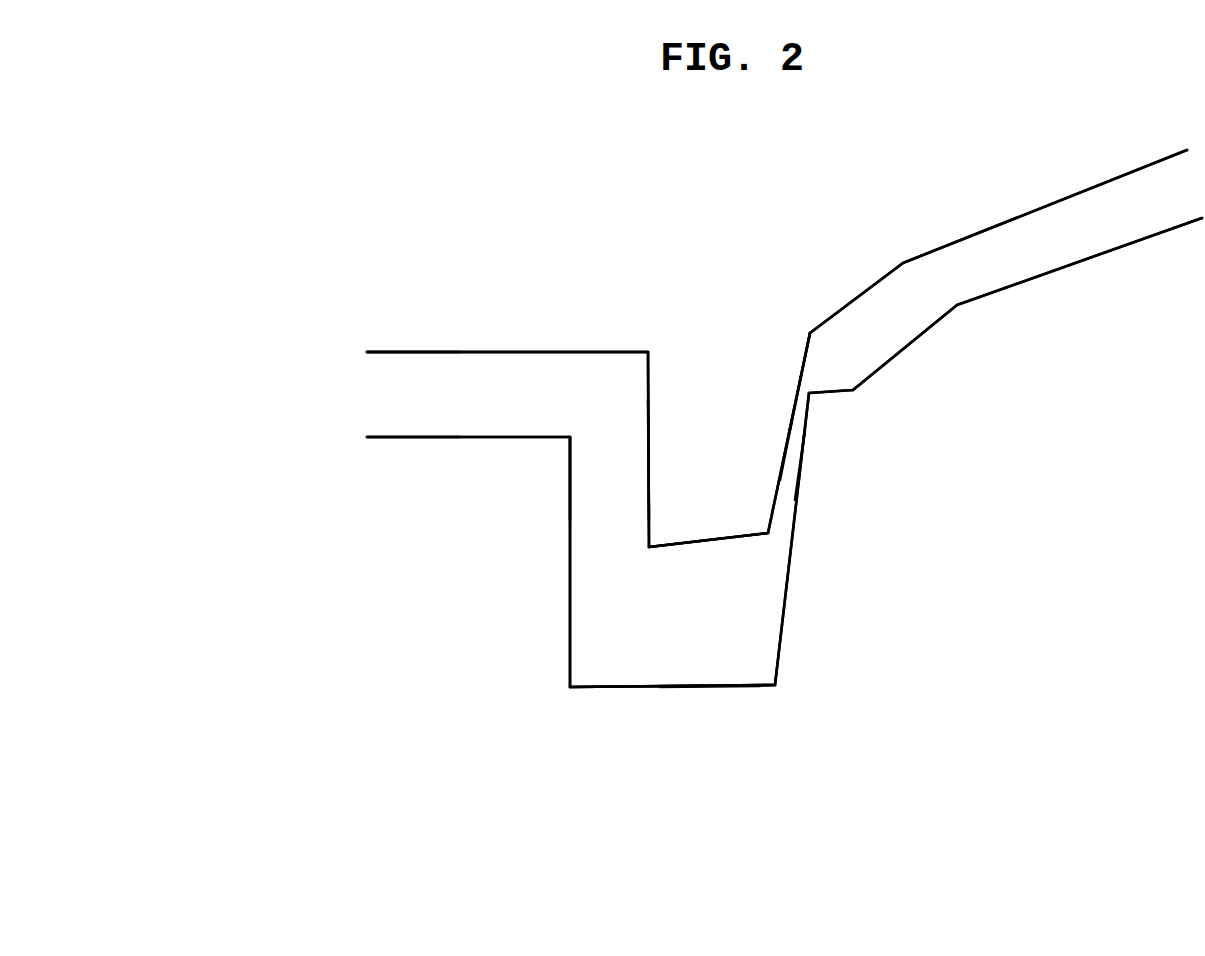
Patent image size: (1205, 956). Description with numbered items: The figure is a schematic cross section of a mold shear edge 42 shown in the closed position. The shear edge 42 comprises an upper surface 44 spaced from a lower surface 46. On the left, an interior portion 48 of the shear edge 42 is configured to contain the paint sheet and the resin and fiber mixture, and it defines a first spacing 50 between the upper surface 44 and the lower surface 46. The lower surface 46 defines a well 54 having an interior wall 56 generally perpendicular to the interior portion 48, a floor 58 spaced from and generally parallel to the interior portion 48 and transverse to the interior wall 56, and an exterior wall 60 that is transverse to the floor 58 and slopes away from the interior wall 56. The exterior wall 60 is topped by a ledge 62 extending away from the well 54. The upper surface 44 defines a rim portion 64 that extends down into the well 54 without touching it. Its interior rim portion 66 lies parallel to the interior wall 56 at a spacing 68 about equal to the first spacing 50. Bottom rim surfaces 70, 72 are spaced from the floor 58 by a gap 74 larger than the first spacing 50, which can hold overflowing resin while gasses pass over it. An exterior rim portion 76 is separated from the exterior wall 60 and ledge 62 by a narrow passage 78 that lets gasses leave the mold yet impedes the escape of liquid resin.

The shear edge 42 is at (300, 389).
The upper surface 44 is at (555, 352).
The lower surface 46 is at (528, 440).
The interior portion 48 is at (507, 403).
The first spacing 50 is at (433, 352).
The well 54 is at (648, 635).
The interior wall 56 is at (568, 612).
The floor 58 is at (650, 687).
The exterior wall 60 is at (780, 635).
The ledge 62 is at (827, 395).
The rim portion 64 is at (705, 533).
The interior rim portion 66 is at (652, 450).
The spacing 68 is at (634, 484).
The bottom rim surface 70 is at (661, 548).
The bottom rim surface 72 is at (731, 545).
The gap 74 is at (695, 547).
The exterior rim portion 76 is at (790, 423).
The passage 78 is at (787, 468).